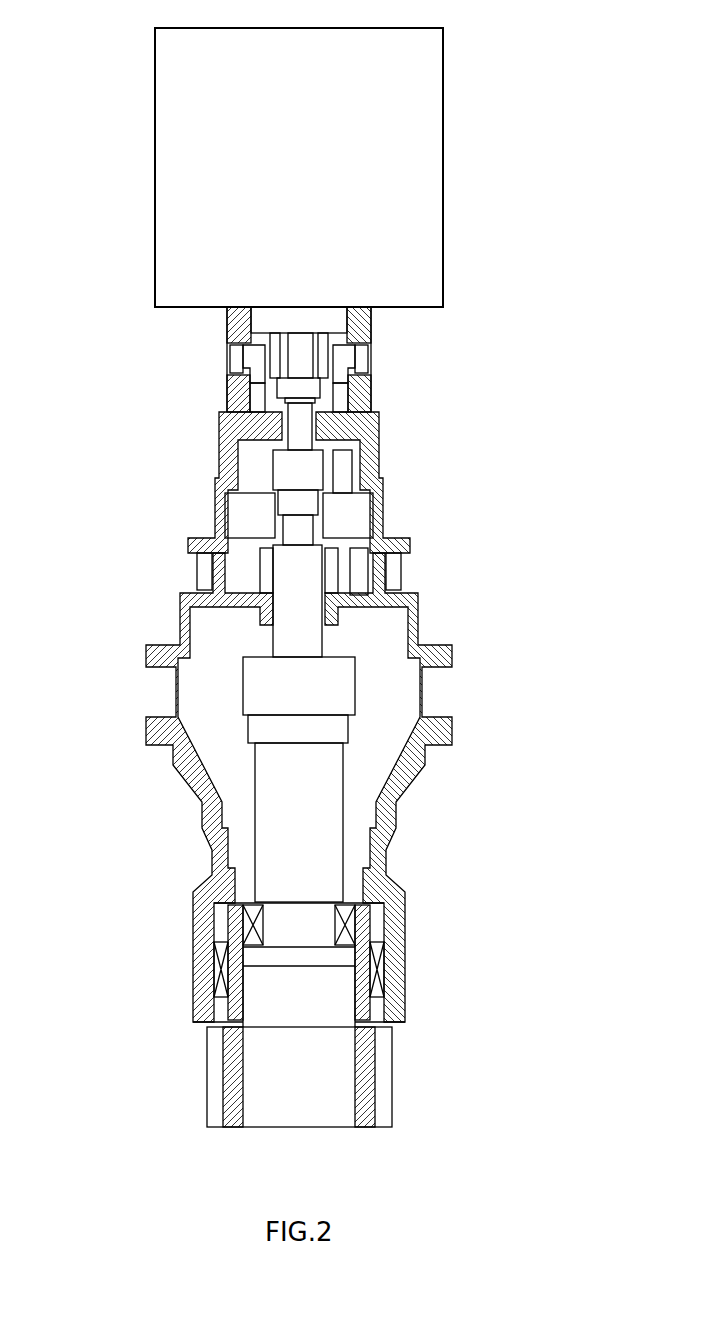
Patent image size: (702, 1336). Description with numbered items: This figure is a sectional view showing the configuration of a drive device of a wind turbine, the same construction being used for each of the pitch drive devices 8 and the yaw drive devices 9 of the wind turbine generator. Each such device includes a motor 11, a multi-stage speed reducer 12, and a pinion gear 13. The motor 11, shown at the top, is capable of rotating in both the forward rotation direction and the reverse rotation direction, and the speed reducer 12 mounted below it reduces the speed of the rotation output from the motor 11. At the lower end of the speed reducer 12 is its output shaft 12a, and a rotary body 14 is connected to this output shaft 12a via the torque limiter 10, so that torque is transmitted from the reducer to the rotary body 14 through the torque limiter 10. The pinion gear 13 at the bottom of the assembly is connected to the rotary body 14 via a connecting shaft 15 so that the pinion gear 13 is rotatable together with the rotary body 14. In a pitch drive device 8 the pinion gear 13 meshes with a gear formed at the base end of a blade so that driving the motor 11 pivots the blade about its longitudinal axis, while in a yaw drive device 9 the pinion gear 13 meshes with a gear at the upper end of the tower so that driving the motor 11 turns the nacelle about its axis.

The pitch drive device 8 is at (417, 344).
The yaw drive device 9 is at (477, 272).
The torque limiter 10 is at (238, 923).
The motor 11 is at (155, 140).
The multi-stage speed reducer 12 is at (419, 613).
The output shaft 12a is at (283, 917).
The pinion gear 13 is at (392, 1087).
The rotary body 14 is at (232, 979).
The connecting shaft 15 is at (265, 1085).